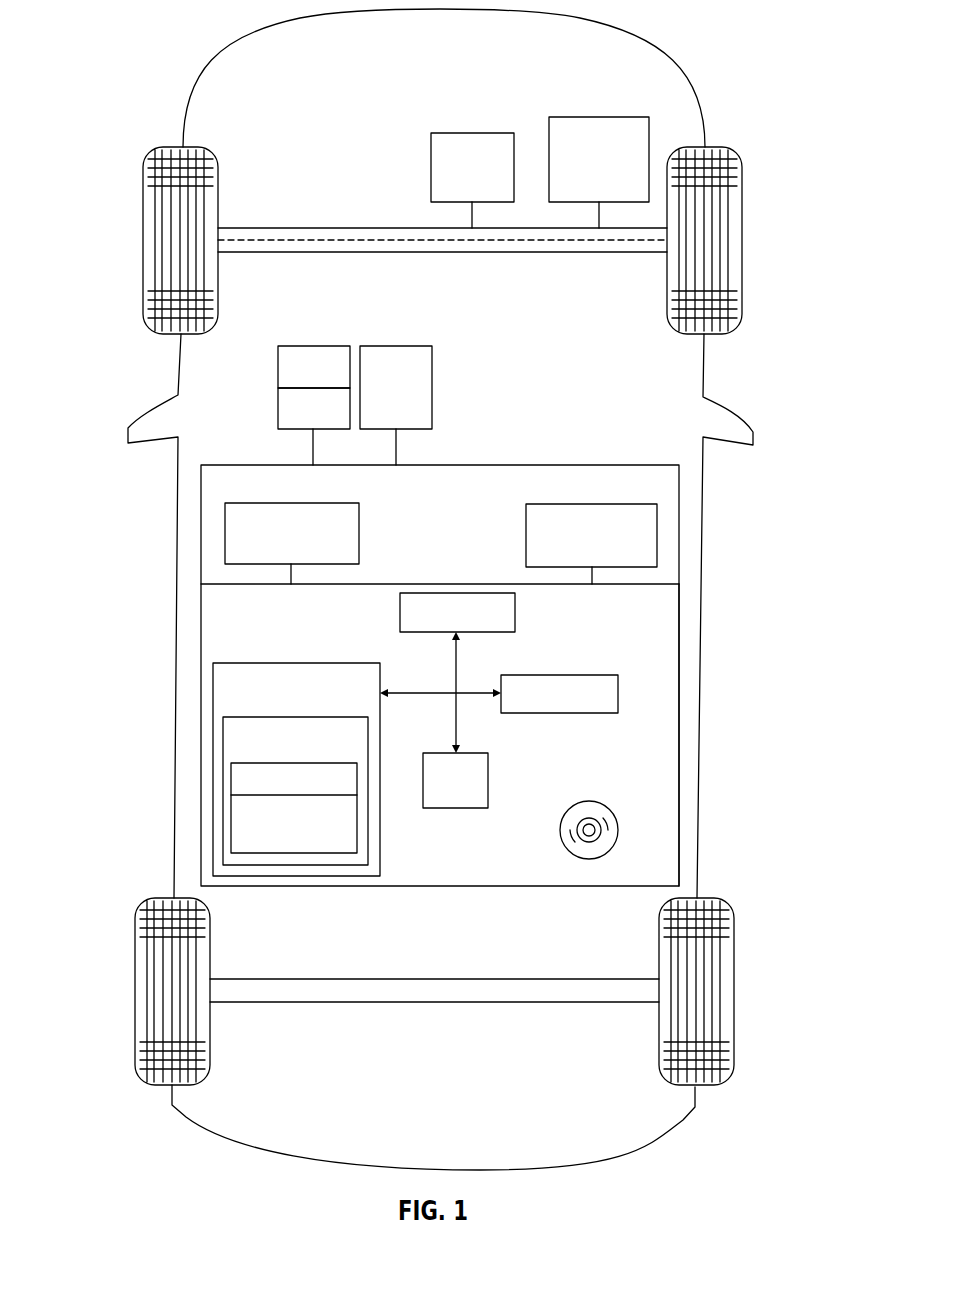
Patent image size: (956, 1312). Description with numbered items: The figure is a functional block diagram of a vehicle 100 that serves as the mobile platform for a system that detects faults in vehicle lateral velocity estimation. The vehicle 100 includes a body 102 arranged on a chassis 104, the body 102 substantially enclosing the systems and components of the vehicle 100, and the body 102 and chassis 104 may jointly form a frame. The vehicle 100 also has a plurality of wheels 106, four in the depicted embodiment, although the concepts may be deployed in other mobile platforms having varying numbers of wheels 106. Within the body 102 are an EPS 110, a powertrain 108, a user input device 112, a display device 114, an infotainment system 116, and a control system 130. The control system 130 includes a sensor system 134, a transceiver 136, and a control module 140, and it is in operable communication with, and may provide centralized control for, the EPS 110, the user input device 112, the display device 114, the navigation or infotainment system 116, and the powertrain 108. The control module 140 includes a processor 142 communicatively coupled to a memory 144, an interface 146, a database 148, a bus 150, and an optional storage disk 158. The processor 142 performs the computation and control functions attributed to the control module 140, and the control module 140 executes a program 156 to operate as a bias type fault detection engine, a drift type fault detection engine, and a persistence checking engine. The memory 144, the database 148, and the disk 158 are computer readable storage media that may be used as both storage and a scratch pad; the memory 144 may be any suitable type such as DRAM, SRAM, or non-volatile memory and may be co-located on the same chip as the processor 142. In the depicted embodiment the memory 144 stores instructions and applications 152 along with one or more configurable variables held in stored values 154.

The vehicle 100 is at (180, 61).
The body 102 is at (178, 478).
The chassis 104 is at (310, 227).
The wheels 106 is at (157, 248).
The powertrain 108 is at (617, 172).
The EPS 110 is at (490, 180).
The user input device 112 is at (332, 379).
The display device 114 is at (332, 420).
The infotainment system 116 is at (414, 400).
The control system 130 is at (535, 465).
The sensor system 134 is at (268, 503).
The transceiver 136 is at (617, 504).
The control module 140 is at (680, 647).
The processor 142 is at (580, 675).
The memory 144 is at (213, 677).
The interface 146 is at (472, 634).
The database 148 is at (455, 808).
The bus 150 is at (454, 668).
The instructions and applications 152 is at (223, 733).
The stored values 154 is at (231, 815).
The program 156 is at (231, 780).
The storage disk 158 is at (598, 803).